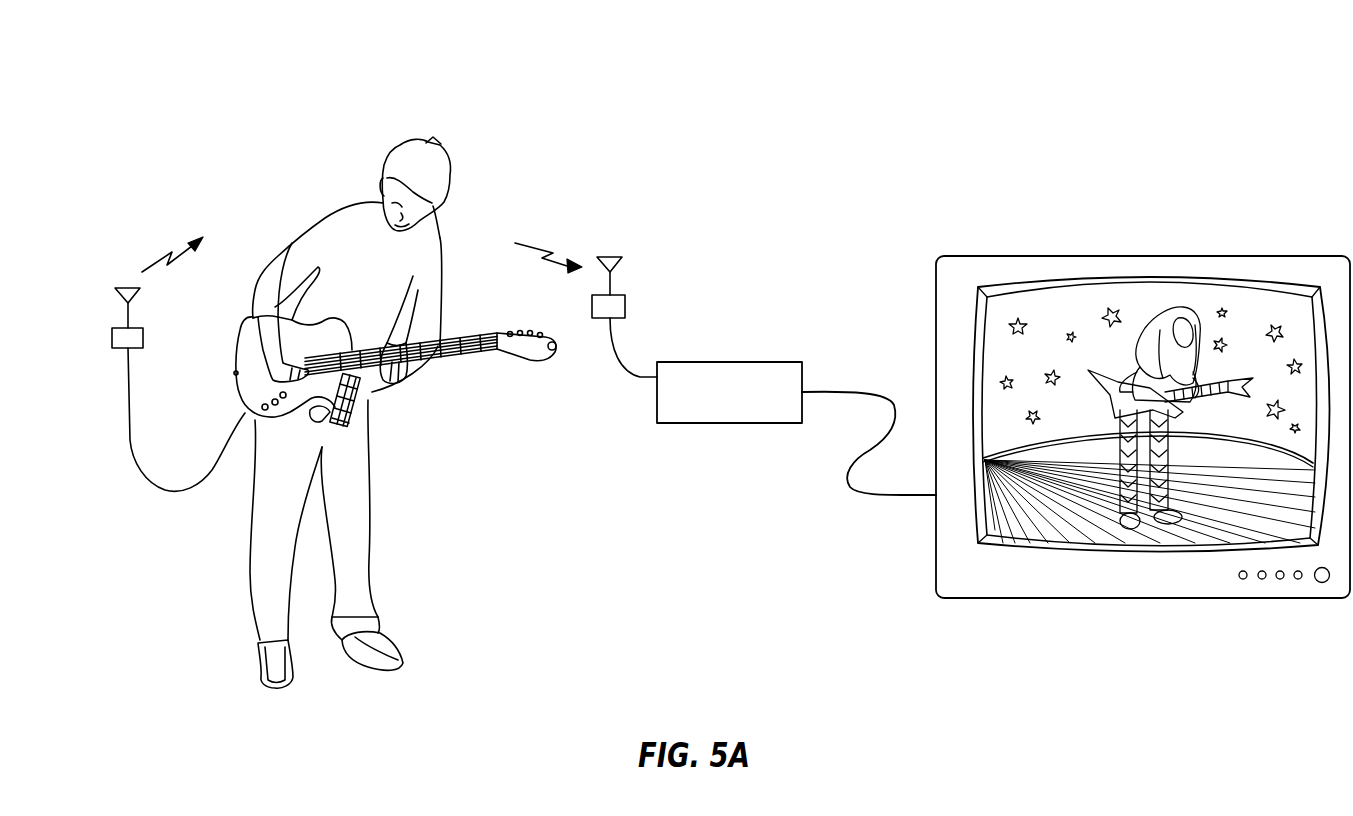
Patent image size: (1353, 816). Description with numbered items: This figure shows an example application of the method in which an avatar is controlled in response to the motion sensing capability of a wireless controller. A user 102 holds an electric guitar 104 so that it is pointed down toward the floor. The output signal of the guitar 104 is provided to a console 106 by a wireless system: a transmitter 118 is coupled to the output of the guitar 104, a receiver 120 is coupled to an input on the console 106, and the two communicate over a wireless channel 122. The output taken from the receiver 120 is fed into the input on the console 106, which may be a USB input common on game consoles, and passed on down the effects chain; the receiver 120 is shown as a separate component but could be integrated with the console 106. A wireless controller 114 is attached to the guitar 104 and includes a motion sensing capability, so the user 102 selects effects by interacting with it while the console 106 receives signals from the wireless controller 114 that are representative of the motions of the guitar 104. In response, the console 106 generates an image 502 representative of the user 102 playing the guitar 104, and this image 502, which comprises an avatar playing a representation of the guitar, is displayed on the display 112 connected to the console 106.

The user 102 is at (421, 138).
The electric guitar 104 is at (466, 340).
The console 106 is at (774, 363).
The display 112 is at (1030, 256).
The wireless controller 114 is at (358, 410).
The transmitter 118 is at (112, 338).
The receiver 120 is at (627, 310).
The wireless channel 122 is at (160, 265).
The image 502 is at (1162, 323).